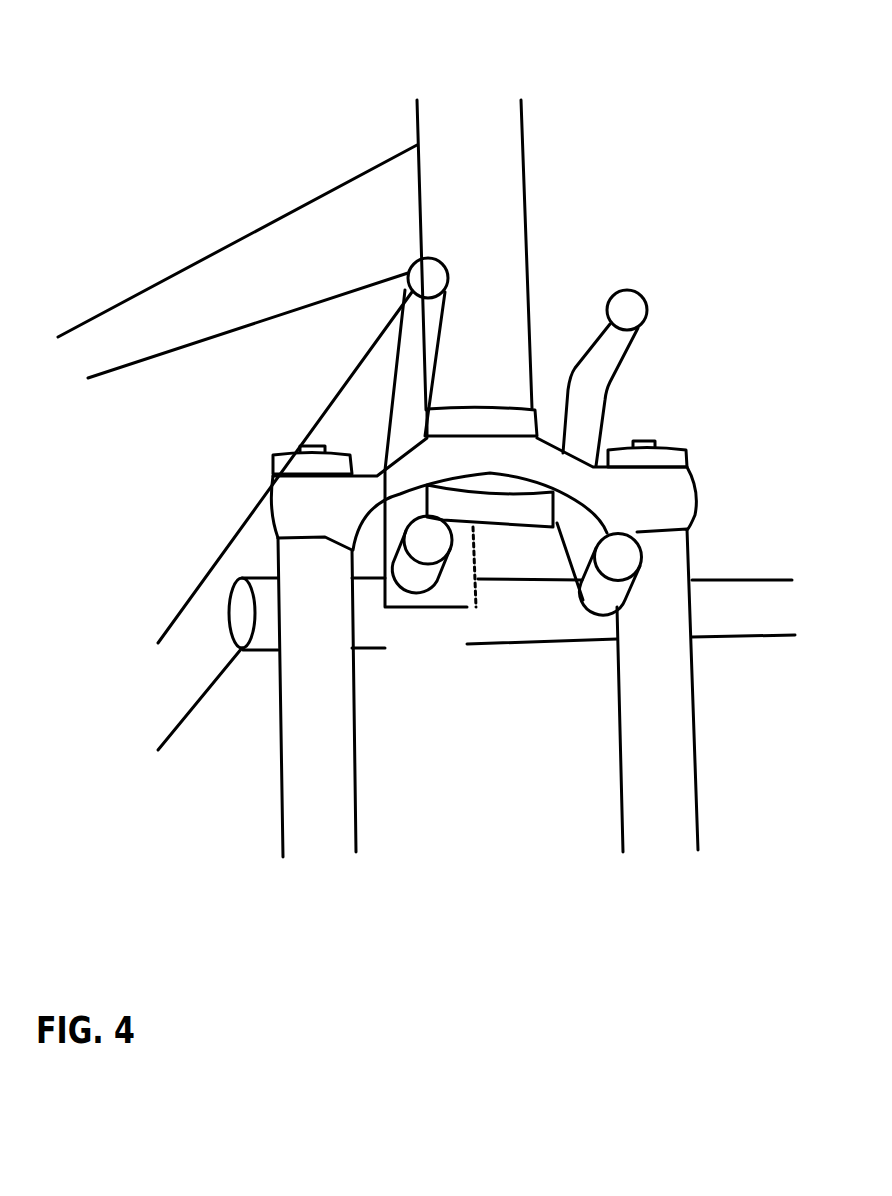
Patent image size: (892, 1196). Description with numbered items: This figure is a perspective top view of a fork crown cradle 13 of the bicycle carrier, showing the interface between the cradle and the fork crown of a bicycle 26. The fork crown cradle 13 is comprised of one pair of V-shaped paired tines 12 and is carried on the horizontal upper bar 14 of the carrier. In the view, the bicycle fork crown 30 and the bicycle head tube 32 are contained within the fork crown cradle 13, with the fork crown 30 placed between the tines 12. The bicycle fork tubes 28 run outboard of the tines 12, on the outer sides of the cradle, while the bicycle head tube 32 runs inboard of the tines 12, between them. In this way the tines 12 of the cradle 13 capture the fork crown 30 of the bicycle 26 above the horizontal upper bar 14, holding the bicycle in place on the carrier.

The tines 12 is at (428, 278).
The fork crown cradle 13 is at (657, 297).
The horizontal upper bar 14 is at (713, 600).
The bicycle 26 is at (262, 197).
The bicycle fork tubes 28 is at (642, 782).
The bicycle fork crown 30 is at (426, 469).
The bicycle head tube 32 is at (488, 305).